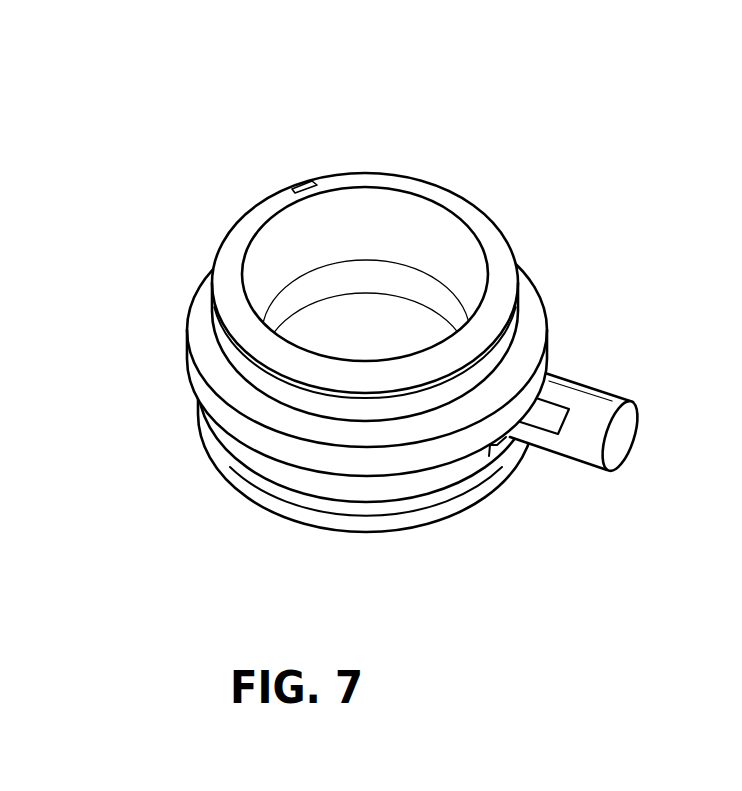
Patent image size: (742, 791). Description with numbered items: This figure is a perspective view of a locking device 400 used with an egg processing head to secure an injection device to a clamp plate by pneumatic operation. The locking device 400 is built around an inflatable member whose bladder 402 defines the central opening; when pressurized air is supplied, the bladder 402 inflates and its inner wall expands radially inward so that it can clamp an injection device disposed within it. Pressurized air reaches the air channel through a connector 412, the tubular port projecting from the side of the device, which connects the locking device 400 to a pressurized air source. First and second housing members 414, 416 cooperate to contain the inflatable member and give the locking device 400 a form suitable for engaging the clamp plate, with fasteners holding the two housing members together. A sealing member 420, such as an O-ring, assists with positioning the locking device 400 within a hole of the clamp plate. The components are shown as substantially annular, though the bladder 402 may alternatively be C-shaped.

The locking device 400 is at (368, 353).
The bladder 402 is at (366, 277).
The connector 412 is at (583, 442).
The first housing member 414 is at (200, 340).
The second housing member 416 is at (363, 530).
The sealing member 420 is at (520, 290).